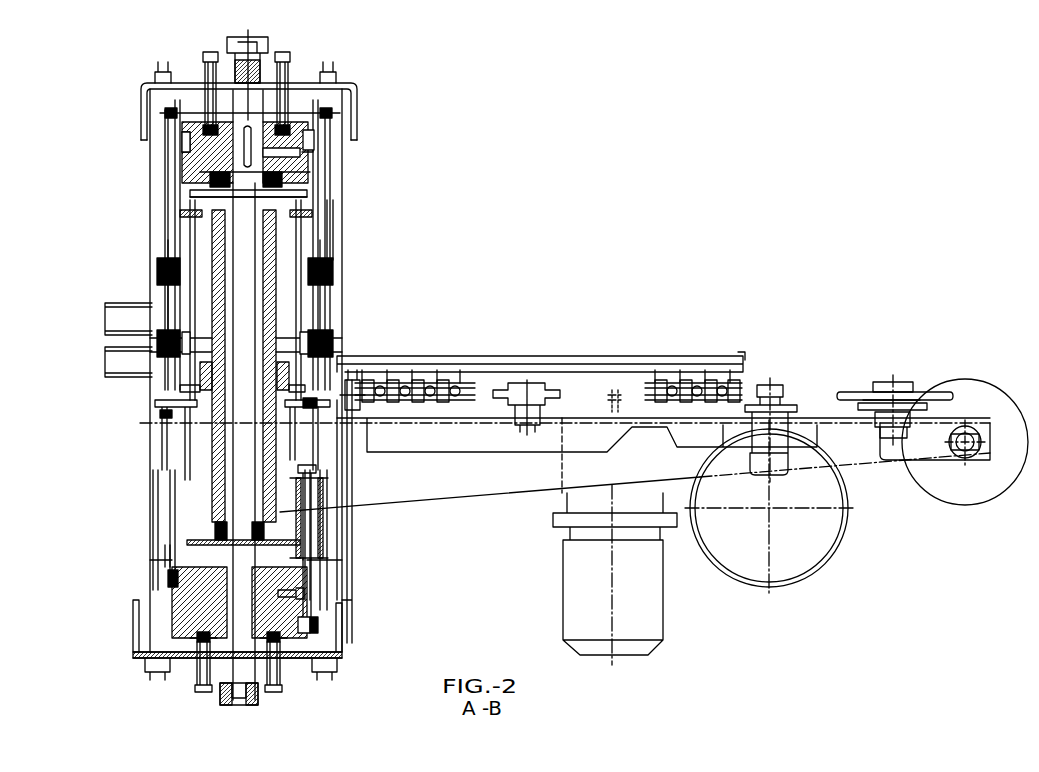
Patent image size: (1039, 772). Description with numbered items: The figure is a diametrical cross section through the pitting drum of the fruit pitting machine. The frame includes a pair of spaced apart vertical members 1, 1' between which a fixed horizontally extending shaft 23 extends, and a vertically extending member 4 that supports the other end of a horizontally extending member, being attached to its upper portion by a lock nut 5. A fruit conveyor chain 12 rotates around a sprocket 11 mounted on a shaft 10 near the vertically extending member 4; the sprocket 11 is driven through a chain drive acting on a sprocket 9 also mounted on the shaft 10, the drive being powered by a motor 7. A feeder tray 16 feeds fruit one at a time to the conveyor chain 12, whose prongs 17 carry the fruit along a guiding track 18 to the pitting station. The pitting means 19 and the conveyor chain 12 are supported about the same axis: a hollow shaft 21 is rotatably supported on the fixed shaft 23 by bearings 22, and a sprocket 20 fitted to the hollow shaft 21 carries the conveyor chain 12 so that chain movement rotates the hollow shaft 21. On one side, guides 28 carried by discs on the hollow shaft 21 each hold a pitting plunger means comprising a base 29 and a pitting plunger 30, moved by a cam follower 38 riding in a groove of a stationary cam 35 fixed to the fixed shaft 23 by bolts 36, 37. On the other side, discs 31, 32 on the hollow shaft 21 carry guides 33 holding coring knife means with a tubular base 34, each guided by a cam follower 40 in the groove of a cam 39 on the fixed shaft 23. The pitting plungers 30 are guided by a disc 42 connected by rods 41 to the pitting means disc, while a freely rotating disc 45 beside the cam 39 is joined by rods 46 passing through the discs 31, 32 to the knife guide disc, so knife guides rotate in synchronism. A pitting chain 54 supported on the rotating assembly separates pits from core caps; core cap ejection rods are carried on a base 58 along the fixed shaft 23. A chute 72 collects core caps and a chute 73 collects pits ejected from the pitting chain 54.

The vertical member 1 is at (222, 88).
The vertical member 1' is at (237, 655).
The vertically extending member 4 is at (967, 400).
The lock nut 5 is at (970, 453).
The motor 7 is at (635, 608).
The sprocket 9 is at (928, 407).
The shaft 10 is at (887, 433).
The sprocket 11 is at (918, 408).
The fruit conveyor chain 12 is at (725, 392).
The feeder tray 16 is at (797, 575).
The prongs 17 is at (680, 372).
The guiding track 18 is at (612, 360).
The pitting means 19 is at (130, 268).
The sprocket 20 is at (185, 387).
The hollow shaft 21 is at (213, 427).
The bearings 22 is at (215, 525).
The fixed shaft 23 is at (232, 450).
The guides 28 is at (320, 520).
The base 29 is at (317, 578).
The pitting plunger 30 is at (318, 445).
The disc 31 is at (200, 213).
The disc 32 is at (333, 270).
The guides 33 is at (330, 222).
The tubular base 34 is at (185, 163).
The cam 35 is at (192, 593).
The bolts 36 is at (290, 593).
The bolts 37 is at (198, 670).
The cam follower 38 is at (307, 627).
The cam 39 is at (285, 123).
The cam follower 40 is at (313, 140).
The rods 41 is at (295, 470).
The disc 42 is at (313, 413).
The disc 45 is at (297, 192).
The rods 46 is at (300, 297).
The pitting chain 54 is at (333, 340).
The base 58 is at (170, 113).
The chute 72 is at (118, 315).
The chute 73 is at (118, 360).